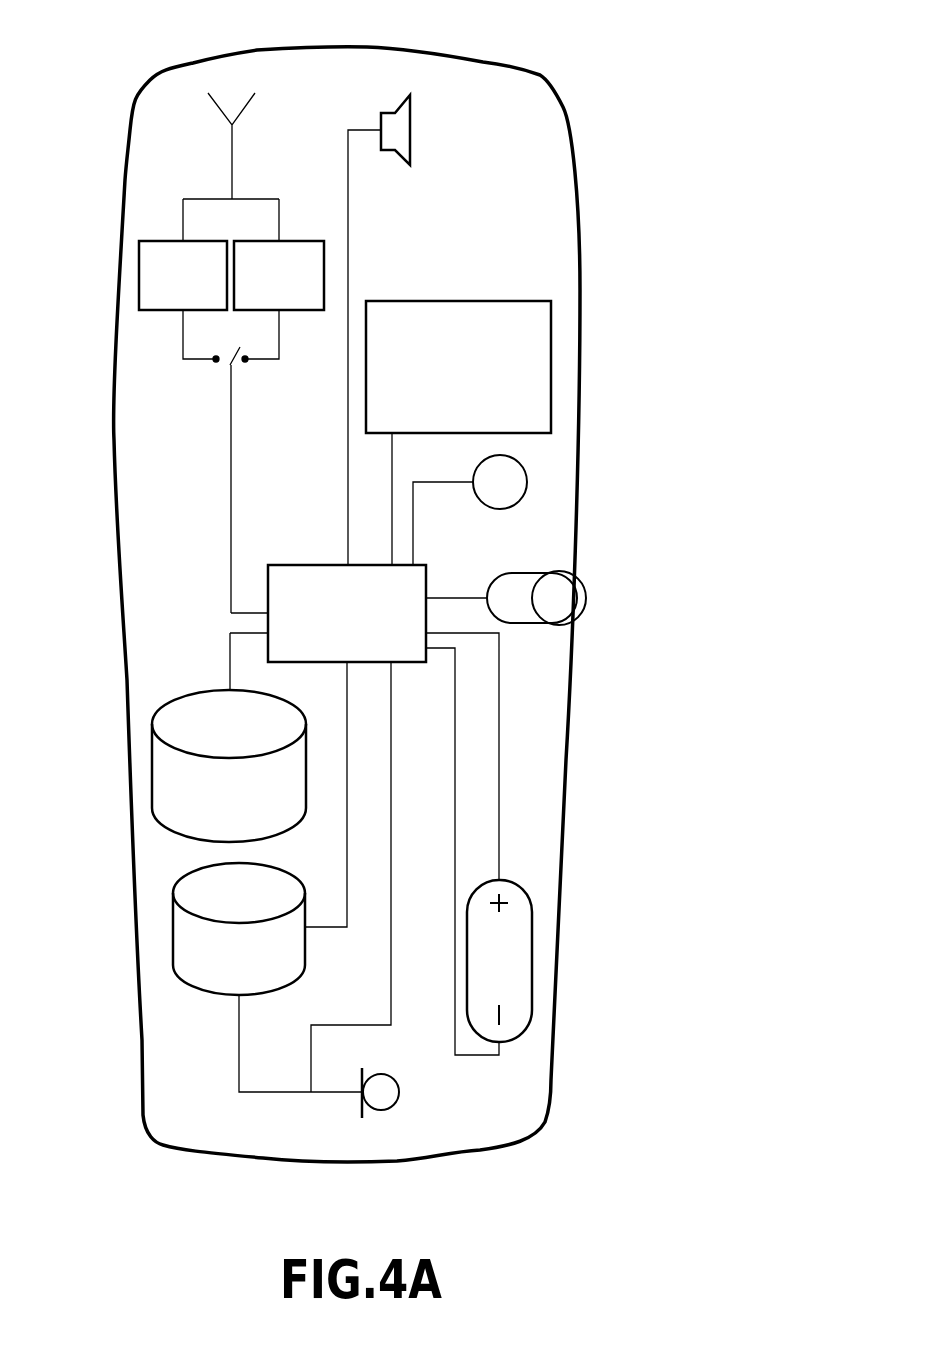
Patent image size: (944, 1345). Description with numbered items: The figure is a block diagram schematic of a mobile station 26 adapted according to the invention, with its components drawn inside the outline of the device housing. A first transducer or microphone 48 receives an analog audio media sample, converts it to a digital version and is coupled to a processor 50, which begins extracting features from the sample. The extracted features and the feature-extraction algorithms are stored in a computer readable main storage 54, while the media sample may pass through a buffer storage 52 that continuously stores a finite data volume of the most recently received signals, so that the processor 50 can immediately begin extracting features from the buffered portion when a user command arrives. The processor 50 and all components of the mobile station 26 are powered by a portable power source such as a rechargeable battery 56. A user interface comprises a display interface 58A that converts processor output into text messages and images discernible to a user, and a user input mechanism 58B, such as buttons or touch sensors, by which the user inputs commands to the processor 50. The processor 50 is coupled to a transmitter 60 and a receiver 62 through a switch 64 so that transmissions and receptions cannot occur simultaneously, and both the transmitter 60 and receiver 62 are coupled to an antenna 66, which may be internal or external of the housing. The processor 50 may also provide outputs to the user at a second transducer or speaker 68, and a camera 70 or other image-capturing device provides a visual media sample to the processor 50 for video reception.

The mobile station 26 is at (683, 209).
The microphone 48 is at (393, 1106).
The processor 50 is at (267, 585).
The buffer storage 52 is at (173, 937).
The main storage 54 is at (152, 783).
The rechargeable battery 56 is at (531, 962).
The display interface 58A is at (553, 345).
The user input mechanism 58B is at (527, 478).
The transmitter 60 is at (139, 278).
The receiver 62 is at (310, 240).
The switch 64 is at (223, 360).
The antenna 66 is at (232, 140).
The speaker 68 is at (398, 100).
The camera 70 is at (560, 598).